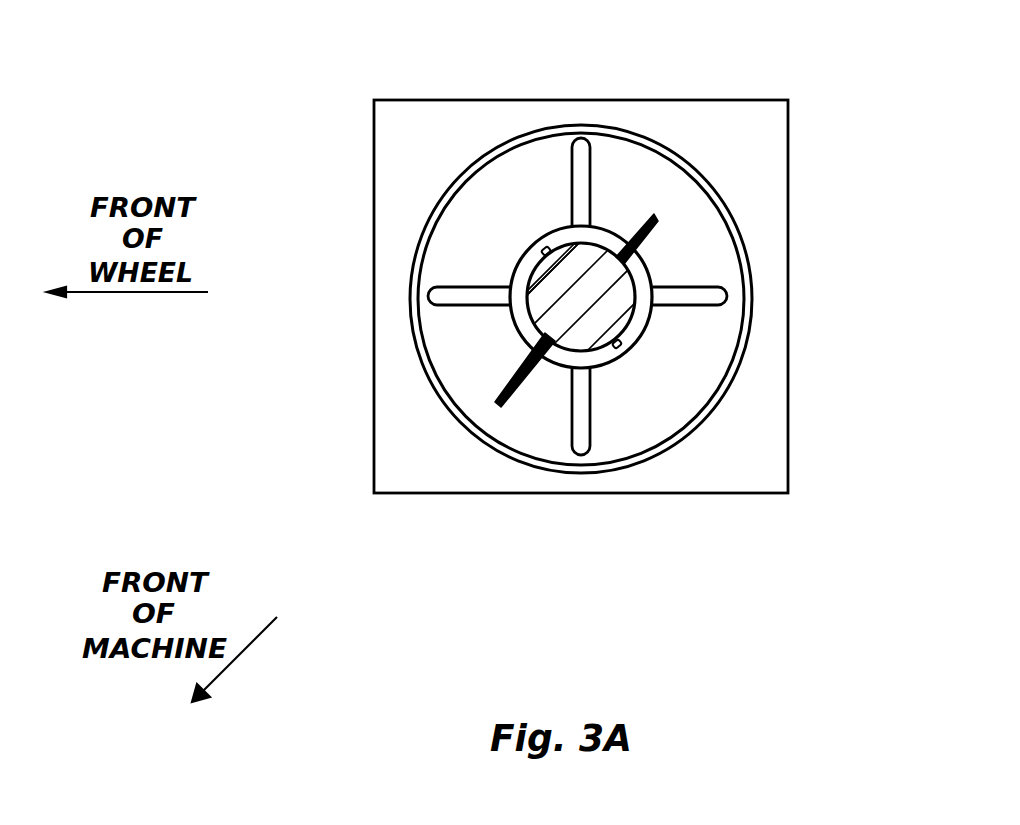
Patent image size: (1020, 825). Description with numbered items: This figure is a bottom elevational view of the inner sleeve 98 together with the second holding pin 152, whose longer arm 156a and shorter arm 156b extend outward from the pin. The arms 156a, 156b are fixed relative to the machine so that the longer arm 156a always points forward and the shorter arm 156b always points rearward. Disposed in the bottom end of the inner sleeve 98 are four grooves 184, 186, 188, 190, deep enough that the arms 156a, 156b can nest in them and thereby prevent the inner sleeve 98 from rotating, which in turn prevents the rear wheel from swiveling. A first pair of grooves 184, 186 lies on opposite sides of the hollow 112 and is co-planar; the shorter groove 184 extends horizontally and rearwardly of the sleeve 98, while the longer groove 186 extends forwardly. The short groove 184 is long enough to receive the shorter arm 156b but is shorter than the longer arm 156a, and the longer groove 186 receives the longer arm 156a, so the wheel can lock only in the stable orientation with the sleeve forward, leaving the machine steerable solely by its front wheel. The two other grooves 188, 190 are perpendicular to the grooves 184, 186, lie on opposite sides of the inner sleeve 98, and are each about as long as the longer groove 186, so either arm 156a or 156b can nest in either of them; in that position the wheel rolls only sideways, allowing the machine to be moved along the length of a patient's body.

The hollow 112 is at (500, 192).
The inner sleeve 98 is at (434, 203).
The second holding pin 152 is at (627, 286).
The shorter groove 184 is at (694, 291).
The longer groove 186 is at (438, 290).
The groove 188 is at (586, 142).
The groove 190 is at (588, 443).
The longer arm 156a is at (497, 407).
The shorter arm 156b is at (657, 220).